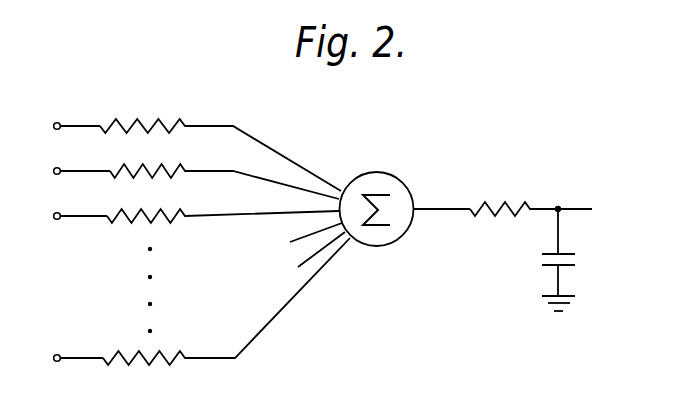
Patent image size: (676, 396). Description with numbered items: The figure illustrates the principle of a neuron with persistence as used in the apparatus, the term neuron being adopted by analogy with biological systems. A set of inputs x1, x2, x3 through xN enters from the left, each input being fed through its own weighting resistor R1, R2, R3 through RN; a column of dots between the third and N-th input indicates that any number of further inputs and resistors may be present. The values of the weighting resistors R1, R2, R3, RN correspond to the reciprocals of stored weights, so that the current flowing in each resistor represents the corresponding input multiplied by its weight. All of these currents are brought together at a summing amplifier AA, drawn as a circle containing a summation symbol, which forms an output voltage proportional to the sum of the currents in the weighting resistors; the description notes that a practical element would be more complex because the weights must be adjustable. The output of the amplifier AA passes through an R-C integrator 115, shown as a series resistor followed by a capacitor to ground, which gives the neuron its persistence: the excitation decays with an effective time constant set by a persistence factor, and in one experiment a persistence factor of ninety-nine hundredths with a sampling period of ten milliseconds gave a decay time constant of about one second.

The R-C integrator 115 is at (535, 191).
The weighting resistor R1 is at (220, 144).
The weighting resistor R2 is at (224, 170).
The weighting resistor R3 is at (223, 203).
The weighting resistor RN is at (226, 301).
The input x1 is at (65, 123).
The input x2 is at (70, 168).
The input x3 is at (69, 213).
The input xN is at (63, 355).
The amplifier AA is at (376, 246).